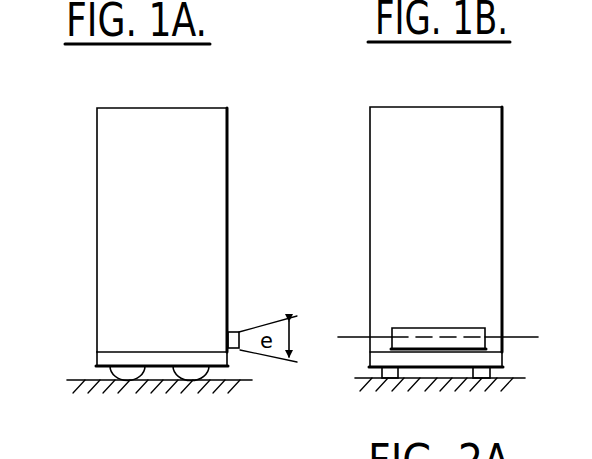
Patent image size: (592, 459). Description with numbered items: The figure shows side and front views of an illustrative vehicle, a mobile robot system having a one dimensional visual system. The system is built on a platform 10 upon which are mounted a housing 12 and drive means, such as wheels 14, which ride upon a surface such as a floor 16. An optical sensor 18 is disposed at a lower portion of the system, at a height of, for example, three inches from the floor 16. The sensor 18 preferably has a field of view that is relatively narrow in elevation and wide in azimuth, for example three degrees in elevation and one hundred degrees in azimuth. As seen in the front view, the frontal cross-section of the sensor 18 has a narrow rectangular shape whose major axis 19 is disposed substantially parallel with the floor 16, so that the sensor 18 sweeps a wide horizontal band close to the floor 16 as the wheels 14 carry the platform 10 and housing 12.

In FIG. 1A, the platform 10 is at (229, 359).
In FIG. 1B, the platform 10 is at (491, 358).
In FIG. 1A, the housing 12 is at (97, 154).
In FIG. 1B, the housing 12 is at (370, 158).
In FIG. 1A, the wheels 14 is at (188, 370).
In FIG. 1B, the wheels 14 is at (480, 373).
In FIG. 1A, the floor 16 is at (84, 382).
In FIG. 1A, the optical sensor 18 is at (234, 332).
In FIG. 1B, the optical sensor 18 is at (483, 328).
In FIG. 1B, the major axis 19 is at (352, 337).